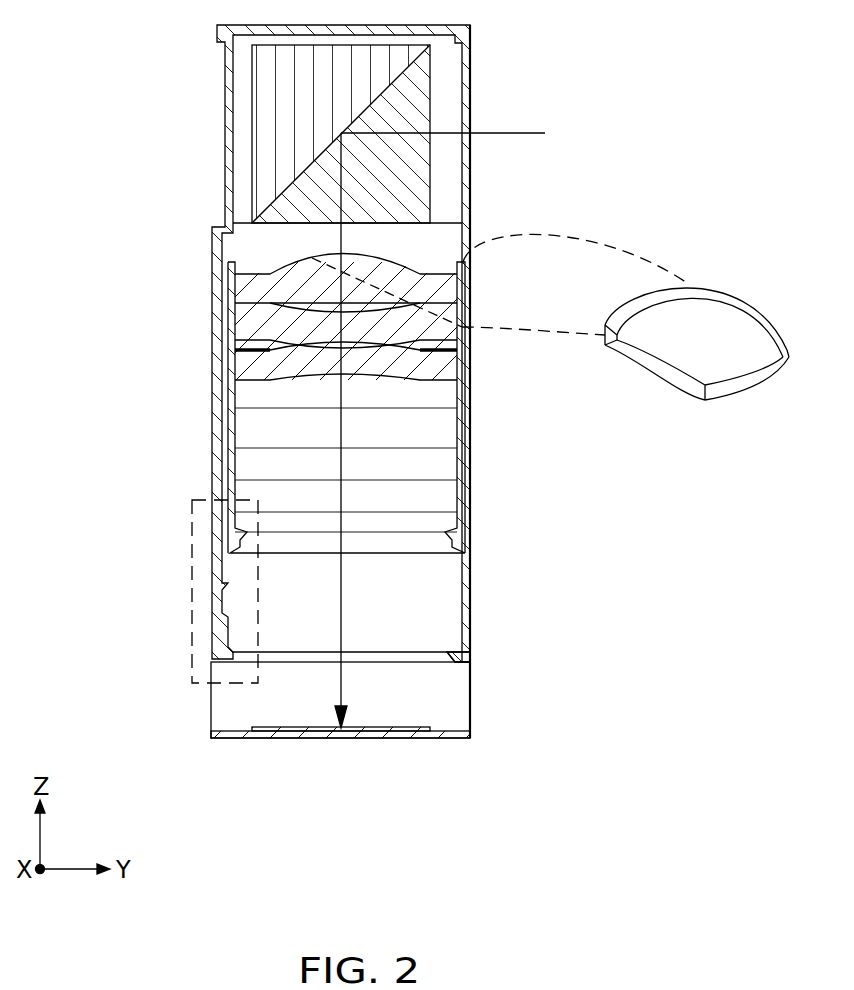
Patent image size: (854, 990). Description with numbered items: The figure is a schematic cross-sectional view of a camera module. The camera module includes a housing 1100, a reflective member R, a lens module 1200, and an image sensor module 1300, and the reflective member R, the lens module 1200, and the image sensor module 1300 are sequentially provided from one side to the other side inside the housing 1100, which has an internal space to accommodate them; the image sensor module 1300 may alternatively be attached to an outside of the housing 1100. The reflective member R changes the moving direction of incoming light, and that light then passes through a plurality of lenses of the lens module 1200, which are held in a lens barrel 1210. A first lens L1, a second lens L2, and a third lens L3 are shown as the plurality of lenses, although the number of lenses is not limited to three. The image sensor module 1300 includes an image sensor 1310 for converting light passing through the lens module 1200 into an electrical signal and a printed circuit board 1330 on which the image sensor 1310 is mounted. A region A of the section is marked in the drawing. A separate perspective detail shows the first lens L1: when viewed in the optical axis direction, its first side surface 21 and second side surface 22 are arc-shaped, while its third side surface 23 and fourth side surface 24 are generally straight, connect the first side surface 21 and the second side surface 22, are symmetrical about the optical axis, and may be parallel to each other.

The housing 1100 is at (217, 32).
The reflective member R is at (305, 190).
The lens module 1200 is at (130, 292).
The lens barrel 1210 is at (233, 436).
The first lens L1 is at (312, 258).
The second lens L2 is at (262, 315).
The third lens L3 is at (262, 347).
The region A is at (214, 591).
The image sensor module 1300 is at (281, 724).
The image sensor 1310 is at (271, 740).
The printed circuit board 1330 is at (361, 735).
The first side surface 21 is at (633, 297).
The second side surface 22 is at (772, 380).
The third side surface 23 is at (655, 363).
The fourth side surface 24 is at (745, 303).